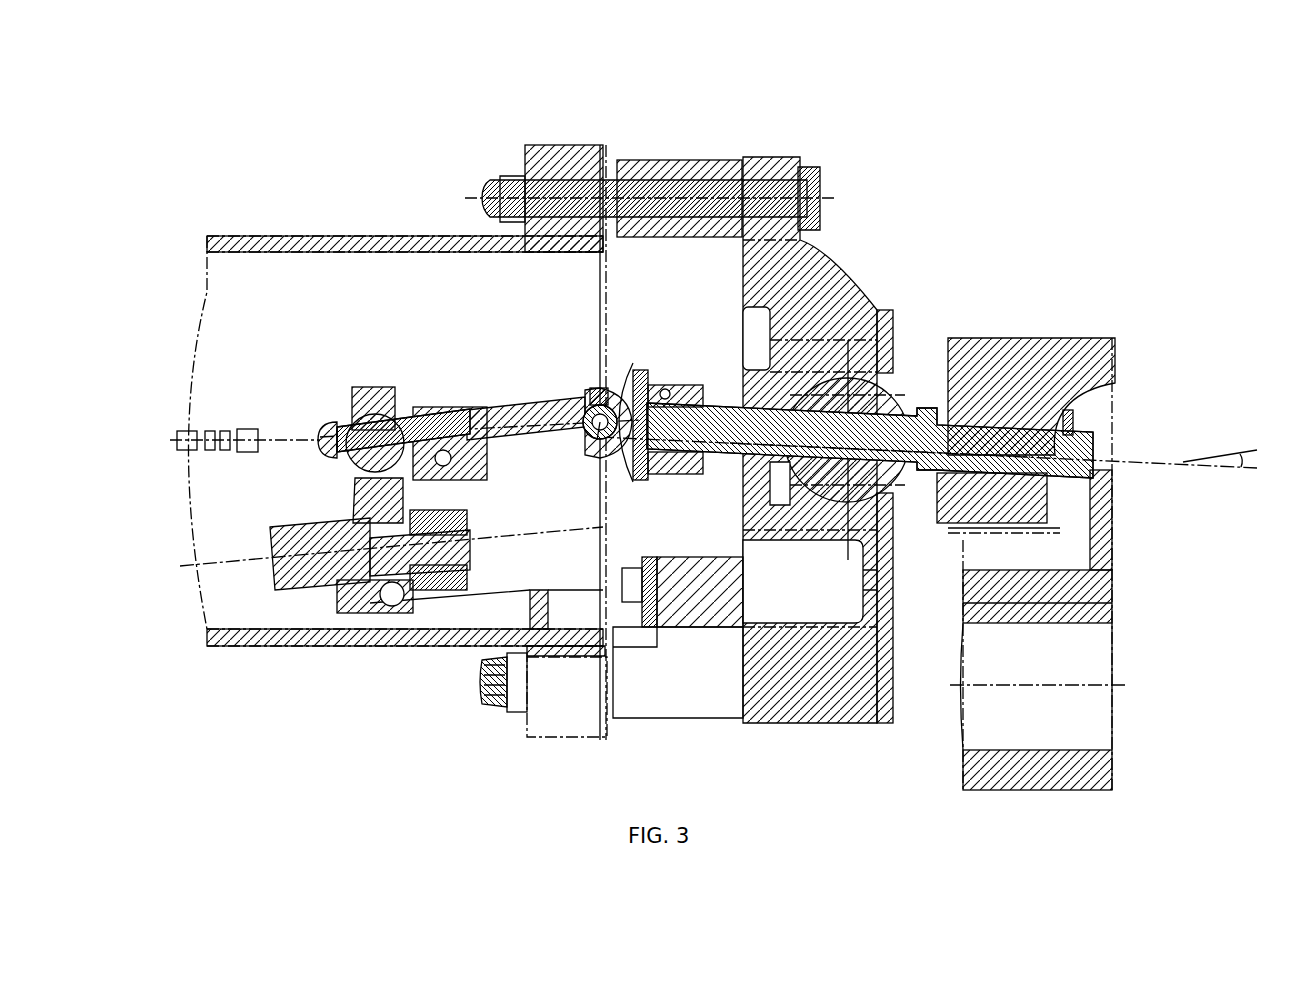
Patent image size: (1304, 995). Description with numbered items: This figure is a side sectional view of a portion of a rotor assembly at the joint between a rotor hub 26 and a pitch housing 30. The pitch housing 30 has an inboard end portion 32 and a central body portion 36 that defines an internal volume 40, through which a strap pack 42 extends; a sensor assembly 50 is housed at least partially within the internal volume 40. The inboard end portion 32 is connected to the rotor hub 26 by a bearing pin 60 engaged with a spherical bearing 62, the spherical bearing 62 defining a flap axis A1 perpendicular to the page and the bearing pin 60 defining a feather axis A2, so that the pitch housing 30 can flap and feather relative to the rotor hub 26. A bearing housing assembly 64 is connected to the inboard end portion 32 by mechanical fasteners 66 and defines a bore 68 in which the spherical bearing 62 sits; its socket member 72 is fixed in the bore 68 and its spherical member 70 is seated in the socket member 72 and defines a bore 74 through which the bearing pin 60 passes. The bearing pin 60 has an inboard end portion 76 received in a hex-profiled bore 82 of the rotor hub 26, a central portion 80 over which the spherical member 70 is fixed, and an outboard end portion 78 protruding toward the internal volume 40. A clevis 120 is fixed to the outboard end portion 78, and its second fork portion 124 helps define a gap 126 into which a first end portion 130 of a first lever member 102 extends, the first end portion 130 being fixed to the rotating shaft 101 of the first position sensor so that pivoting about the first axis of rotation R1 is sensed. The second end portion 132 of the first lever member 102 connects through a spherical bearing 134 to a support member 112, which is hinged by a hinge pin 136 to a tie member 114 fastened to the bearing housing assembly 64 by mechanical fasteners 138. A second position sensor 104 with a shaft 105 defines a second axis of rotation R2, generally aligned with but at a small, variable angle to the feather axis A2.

The rotor hub 26 is at (1072, 338).
The pitch housing 30 is at (340, 236).
The inboard end portion 32 is at (608, 135).
The central body portion 36 is at (243, 646).
The internal volume 40 is at (222, 305).
The strap pack 42 is at (236, 429).
The sensor assembly 50 is at (338, 388).
The bearing pin 60 is at (902, 478).
The spherical bearing 62 is at (907, 362).
The bearing housing assembly 64 is at (845, 723).
The mechanical fasteners 66 is at (702, 195).
The bore 68 is at (745, 385).
The spherical member 70 is at (797, 530).
The socket member 72 is at (832, 530).
The bore 74 is at (797, 410).
The inboard end portion 76 is at (1078, 432).
The outboard end portion 78 is at (680, 465).
The central portion 80 is at (800, 462).
The bore 82 is at (987, 428).
The shaft 101 is at (617, 400).
The first lever member 102 is at (505, 400).
The second position sensor 104 is at (270, 535).
The shaft 105 is at (420, 578).
The support member 112 is at (375, 388).
The tie member 114 is at (528, 625).
The clevis 120 is at (652, 385).
The second fork portion 124 is at (588, 392).
The gap 126 is at (595, 462).
The first end portion 130 is at (610, 385).
The second end portion 132 is at (437, 405).
The spherical bearing 134 is at (340, 425).
The hinge pin 136 is at (380, 612).
The mechanical fasteners 138 is at (626, 568).
The first axis of rotation R1 is at (597, 440).
The second axis of rotation R2 is at (235, 565).
The flap axis A1 is at (880, 456).
The feather axis A2 is at (1165, 468).